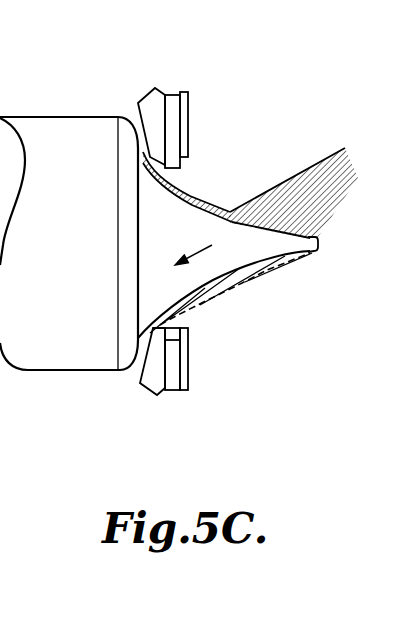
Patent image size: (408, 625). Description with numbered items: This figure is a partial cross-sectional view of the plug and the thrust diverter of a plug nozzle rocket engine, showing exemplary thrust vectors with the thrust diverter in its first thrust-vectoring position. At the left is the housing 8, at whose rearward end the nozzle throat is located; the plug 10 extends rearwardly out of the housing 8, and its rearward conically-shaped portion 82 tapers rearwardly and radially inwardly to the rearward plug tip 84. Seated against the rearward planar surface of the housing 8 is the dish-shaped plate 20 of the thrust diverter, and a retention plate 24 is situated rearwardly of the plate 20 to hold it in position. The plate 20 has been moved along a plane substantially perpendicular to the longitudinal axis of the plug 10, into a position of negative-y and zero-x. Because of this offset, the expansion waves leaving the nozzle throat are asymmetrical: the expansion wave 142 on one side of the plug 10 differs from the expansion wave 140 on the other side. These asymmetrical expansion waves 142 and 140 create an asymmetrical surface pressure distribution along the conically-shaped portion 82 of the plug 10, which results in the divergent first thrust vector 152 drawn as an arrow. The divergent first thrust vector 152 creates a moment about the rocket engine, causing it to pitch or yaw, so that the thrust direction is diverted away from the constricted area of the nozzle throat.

The housing 8 is at (145, 92).
The dish-shaped plate 20 is at (170, 93).
The retention plate 24 is at (188, 91).
The conically-shaped portion 82 is at (253, 197).
The asymmetrical expansion wave 142 is at (310, 172).
The rearward plug tip 84 is at (320, 241).
The plug 10 is at (263, 272).
The expansion wave 140 is at (213, 300).
The divergent first thrust vector 152 is at (200, 247).